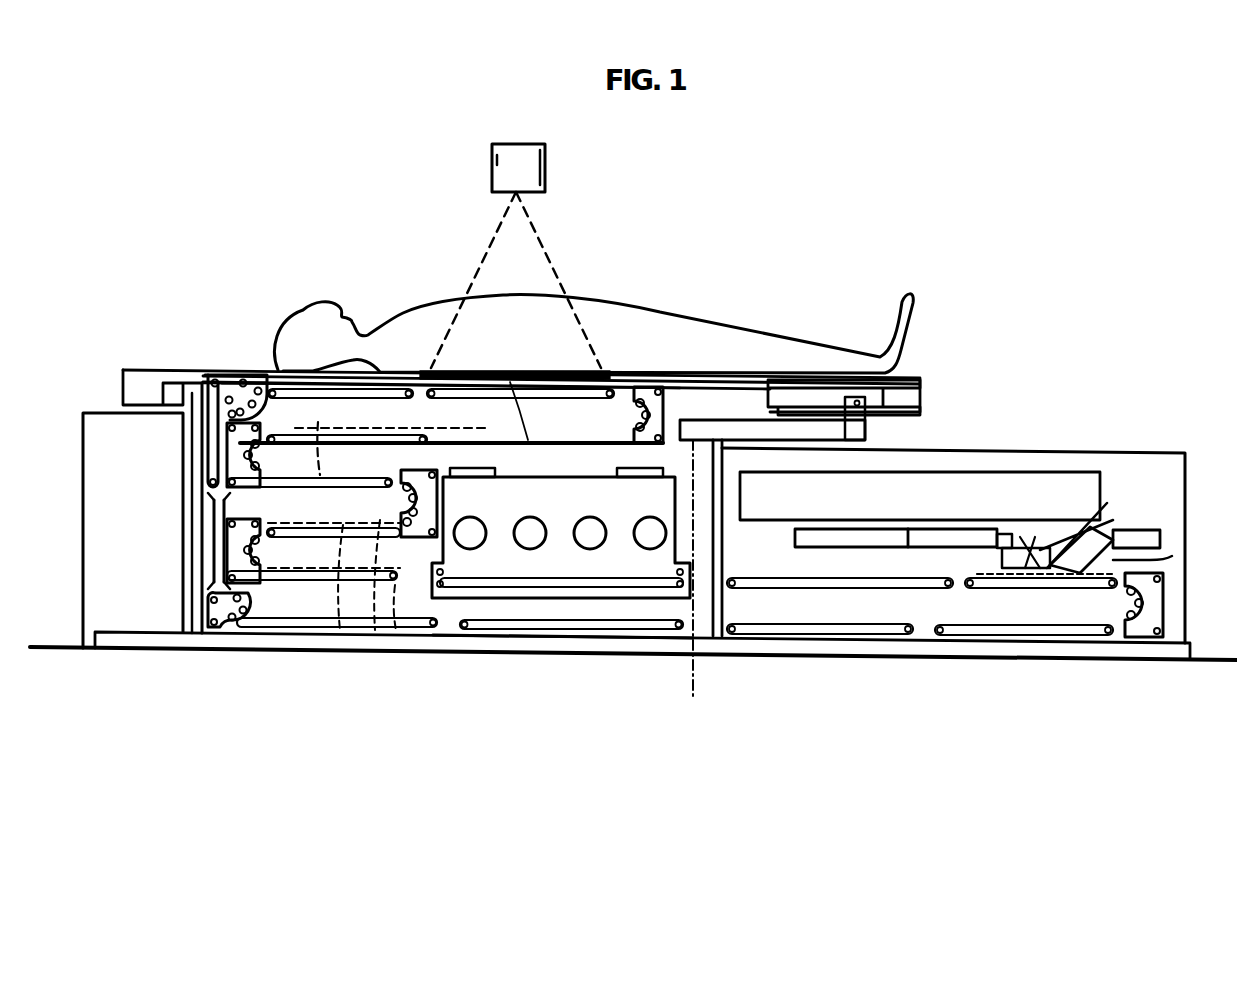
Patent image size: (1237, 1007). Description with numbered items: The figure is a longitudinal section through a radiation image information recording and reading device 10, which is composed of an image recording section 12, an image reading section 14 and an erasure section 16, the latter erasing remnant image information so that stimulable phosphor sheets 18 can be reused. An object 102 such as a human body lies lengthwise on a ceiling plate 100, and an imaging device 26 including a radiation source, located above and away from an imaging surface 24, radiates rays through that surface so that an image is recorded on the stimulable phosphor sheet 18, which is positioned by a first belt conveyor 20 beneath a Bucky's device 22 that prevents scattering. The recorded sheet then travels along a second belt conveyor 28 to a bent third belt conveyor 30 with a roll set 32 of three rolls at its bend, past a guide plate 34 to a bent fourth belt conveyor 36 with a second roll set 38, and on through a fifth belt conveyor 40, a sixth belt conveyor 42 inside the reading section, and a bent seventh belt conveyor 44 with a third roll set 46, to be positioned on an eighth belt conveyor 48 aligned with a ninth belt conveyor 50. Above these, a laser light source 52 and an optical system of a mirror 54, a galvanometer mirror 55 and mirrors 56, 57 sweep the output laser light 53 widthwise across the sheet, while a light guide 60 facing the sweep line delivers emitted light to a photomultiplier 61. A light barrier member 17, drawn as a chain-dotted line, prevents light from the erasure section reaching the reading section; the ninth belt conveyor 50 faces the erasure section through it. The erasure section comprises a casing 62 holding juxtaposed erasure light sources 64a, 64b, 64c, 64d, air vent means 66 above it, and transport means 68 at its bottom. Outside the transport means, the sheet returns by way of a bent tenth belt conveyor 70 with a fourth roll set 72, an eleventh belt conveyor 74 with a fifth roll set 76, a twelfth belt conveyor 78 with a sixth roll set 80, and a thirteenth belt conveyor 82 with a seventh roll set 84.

The radiation image information recording and reading device 10 is at (205, 370).
The image recording section 12 is at (458, 402).
The image reading section 14 is at (1126, 508).
The erasure section 16 is at (550, 605).
The light barrier member 17 is at (772, 575).
The stimulable phosphor sheet 18 is at (570, 388).
The first belt conveyor 20 is at (556, 396).
The Bucky's device 22 is at (610, 376).
The imaging surface 24 is at (481, 368).
The imaging device 26 is at (548, 158).
The second belt conveyor 28 is at (280, 378).
The third belt conveyor 30 is at (207, 443).
The roll set 32 is at (245, 400).
The guide plate 34 is at (213, 540).
The fourth belt conveyor 36 is at (290, 630).
The second roll set 38 is at (240, 632).
The fifth belt conveyor 40 is at (490, 632).
The sixth belt conveyor 42 is at (795, 636).
The seventh belt conveyor 44 is at (1097, 637).
The third roll set 46 is at (1122, 622).
The eighth belt conveyor 48 is at (1058, 592).
The ninth belt conveyor 50 is at (870, 592).
The laser light source 52 is at (920, 492).
The output laser light 53 is at (1098, 510).
The mirror 54 is at (1118, 505).
The galvanometer mirror 55 is at (1004, 547).
The mirror 56 is at (1010, 548).
The mirror 57 is at (1026, 566).
The light guide 60 is at (1150, 558).
The photomultiplier 61 is at (1116, 535).
The casing 62 is at (605, 482).
The erasure light source 64a is at (467, 520).
The erasure light source 64b is at (530, 520).
The erasure light source 64c is at (590, 520).
The erasure light source 64d is at (648, 520).
The air vent means 66 is at (662, 462).
The transport means 68 is at (622, 595).
The tenth belt conveyor 70 is at (372, 595).
The fourth roll set 72 is at (270, 588).
The eleventh belt conveyor 74 is at (318, 583).
The fifth roll set 76 is at (402, 498).
The twelfth belt conveyor 78 is at (295, 487).
The sixth roll set 80 is at (260, 458).
The thirteenth belt conveyor 82 is at (510, 382).
The seventh roll set 84 is at (630, 410).
The ceiling plate 100 is at (915, 376).
The object 102 is at (780, 338).